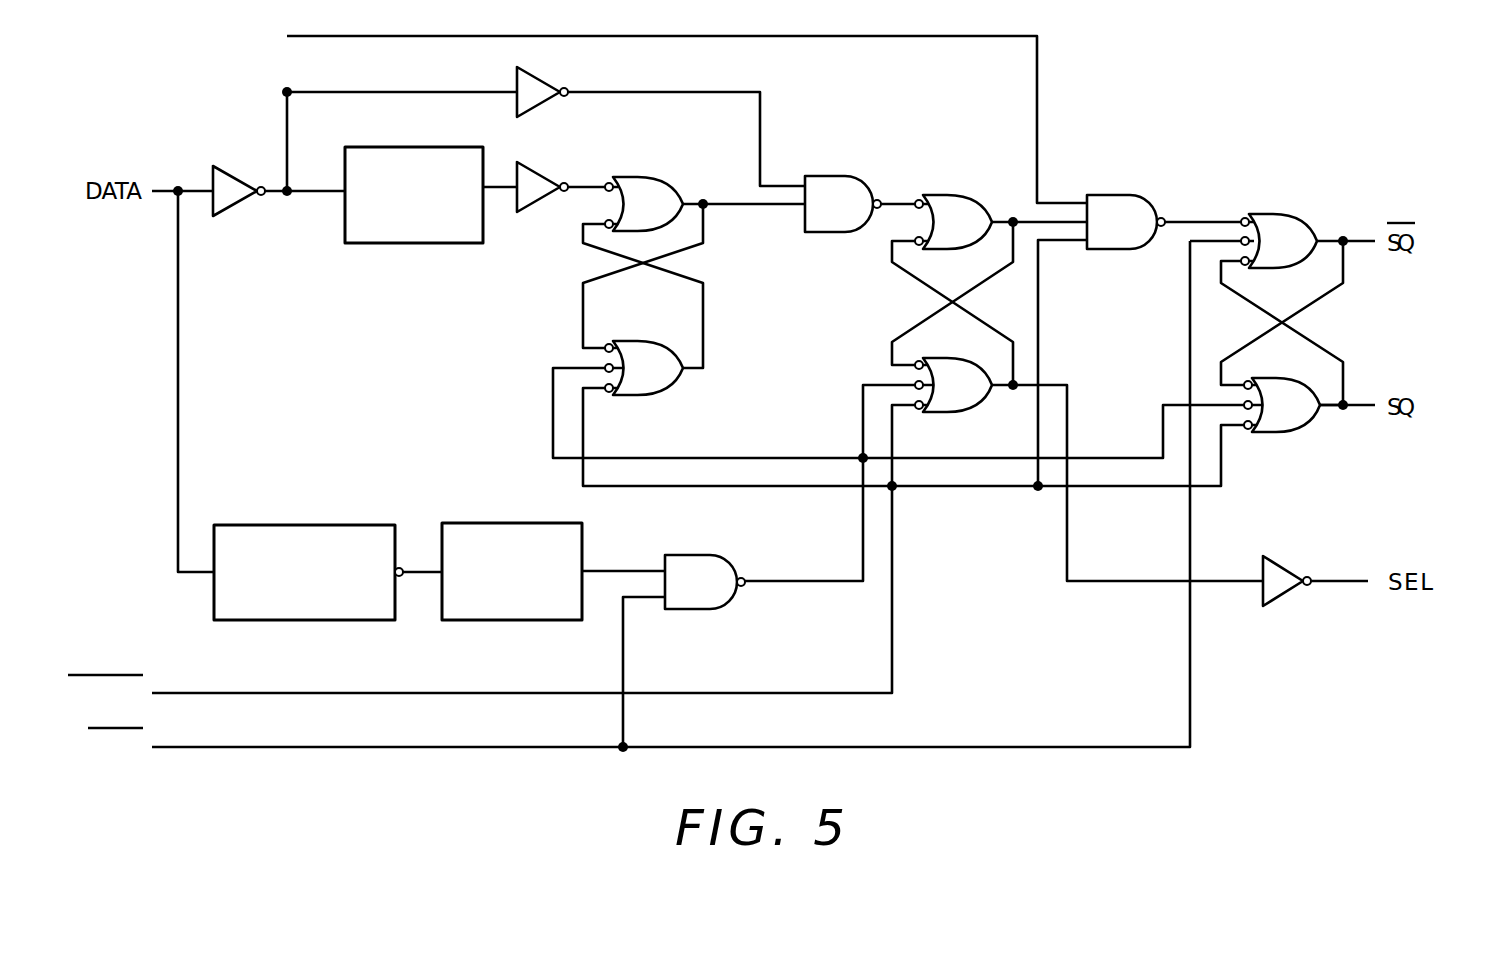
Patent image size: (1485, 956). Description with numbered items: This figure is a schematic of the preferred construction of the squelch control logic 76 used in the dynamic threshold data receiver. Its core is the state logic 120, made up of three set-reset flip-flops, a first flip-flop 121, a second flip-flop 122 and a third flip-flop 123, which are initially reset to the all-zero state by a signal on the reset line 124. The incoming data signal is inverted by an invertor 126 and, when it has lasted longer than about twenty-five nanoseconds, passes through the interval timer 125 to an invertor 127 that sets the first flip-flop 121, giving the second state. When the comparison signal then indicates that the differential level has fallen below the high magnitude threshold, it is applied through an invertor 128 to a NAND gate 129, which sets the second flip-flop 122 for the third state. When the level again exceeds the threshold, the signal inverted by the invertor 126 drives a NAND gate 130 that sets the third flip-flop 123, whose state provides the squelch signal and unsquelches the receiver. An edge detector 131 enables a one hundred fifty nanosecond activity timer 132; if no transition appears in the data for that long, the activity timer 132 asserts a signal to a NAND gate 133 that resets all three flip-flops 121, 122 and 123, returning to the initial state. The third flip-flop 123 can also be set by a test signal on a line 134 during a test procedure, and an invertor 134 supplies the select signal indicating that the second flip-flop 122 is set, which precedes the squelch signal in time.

The squelch control logic 76 is at (1181, 107).
The state logic 120 is at (942, 541).
The first flip-flop 121 is at (660, 159).
The second flip-flop 122 is at (973, 172).
The third flip-flop 123 is at (1287, 215).
The reset line 124 is at (347, 693).
The interval timer 125 is at (460, 147).
The invertor 126 is at (235, 207).
The invertor 127 is at (540, 166).
The invertor 128 is at (540, 73).
The NAND gate 129 is at (840, 176).
The NAND gate 130 is at (1110, 196).
The edge detector 131 is at (347, 525).
The activity timer 132 is at (555, 523).
The NAND gate 133 is at (690, 609).
The invertor 134 is at (1280, 597).